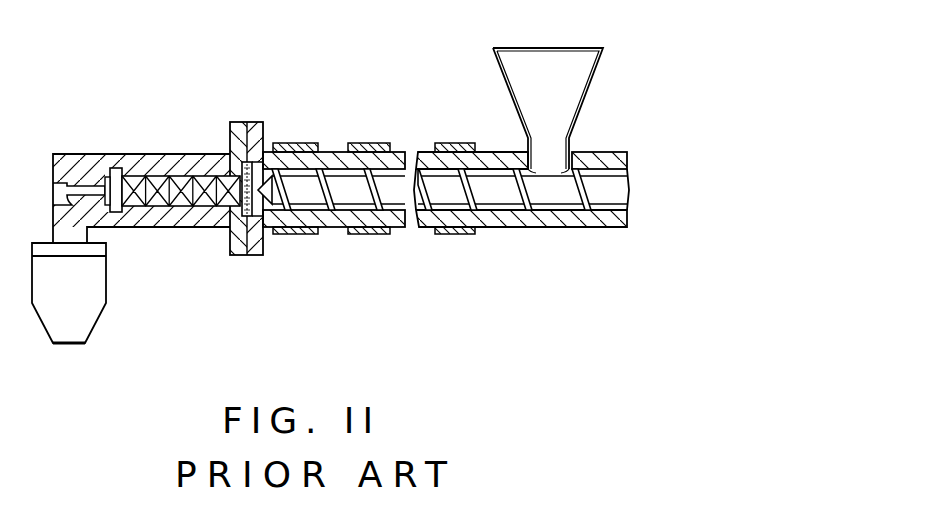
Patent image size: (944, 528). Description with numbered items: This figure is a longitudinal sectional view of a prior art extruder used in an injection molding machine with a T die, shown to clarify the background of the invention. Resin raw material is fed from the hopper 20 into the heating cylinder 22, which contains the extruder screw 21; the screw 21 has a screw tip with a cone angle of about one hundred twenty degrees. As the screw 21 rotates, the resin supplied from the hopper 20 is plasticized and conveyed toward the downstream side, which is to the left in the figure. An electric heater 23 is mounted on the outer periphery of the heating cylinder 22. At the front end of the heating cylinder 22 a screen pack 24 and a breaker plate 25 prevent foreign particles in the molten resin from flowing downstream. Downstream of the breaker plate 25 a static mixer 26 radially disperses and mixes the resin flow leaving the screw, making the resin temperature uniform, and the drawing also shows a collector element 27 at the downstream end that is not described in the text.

The hopper 20 is at (508, 80).
The extruder screw 21 is at (346, 196).
The heating cylinder 22 is at (496, 226).
The electric heater 23 is at (367, 143).
The screen pack 24 is at (258, 168).
The breaker plate 25 is at (241, 163).
The static mixer 26 is at (177, 175).
The collector 27 is at (106, 280).